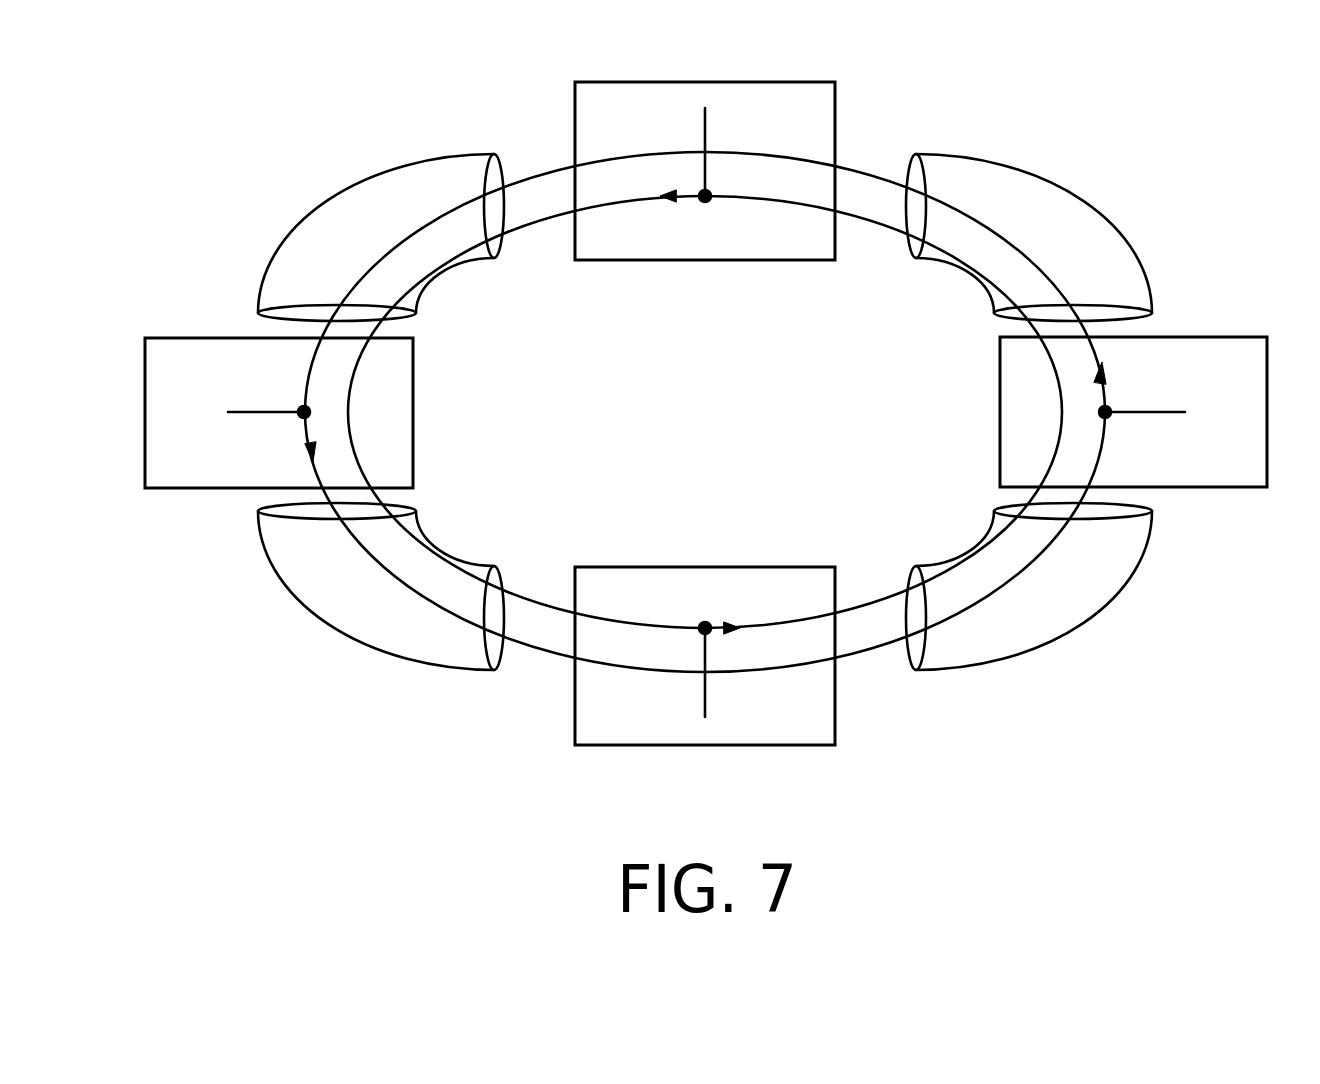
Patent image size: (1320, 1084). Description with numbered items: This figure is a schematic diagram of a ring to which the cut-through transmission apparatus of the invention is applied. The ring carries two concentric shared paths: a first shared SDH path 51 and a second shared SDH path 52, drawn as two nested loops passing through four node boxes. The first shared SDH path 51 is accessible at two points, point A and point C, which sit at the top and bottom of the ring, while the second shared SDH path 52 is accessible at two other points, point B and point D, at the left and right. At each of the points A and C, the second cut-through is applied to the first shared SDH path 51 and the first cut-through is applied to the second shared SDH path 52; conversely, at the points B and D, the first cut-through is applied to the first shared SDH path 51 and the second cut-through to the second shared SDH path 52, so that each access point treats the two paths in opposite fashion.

The first shared SDH path 51 is at (468, 568).
The second shared SDH path 52 is at (388, 568).
The point A is at (705, 171).
The point B is at (279, 413).
The point C is at (705, 656).
The point D is at (1133, 412).